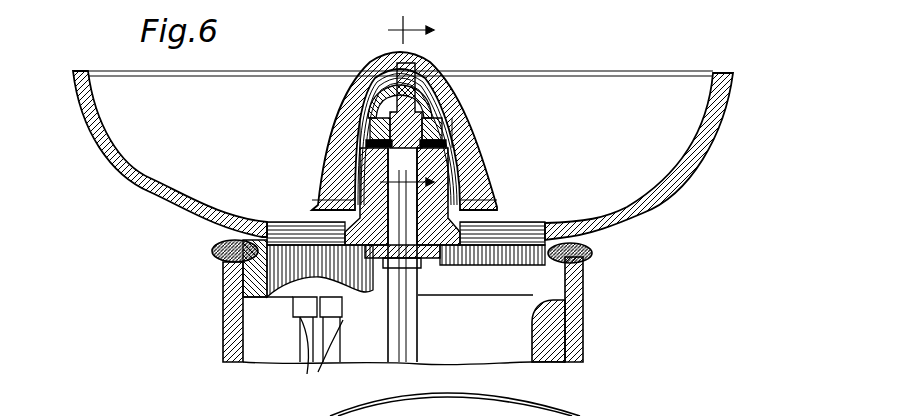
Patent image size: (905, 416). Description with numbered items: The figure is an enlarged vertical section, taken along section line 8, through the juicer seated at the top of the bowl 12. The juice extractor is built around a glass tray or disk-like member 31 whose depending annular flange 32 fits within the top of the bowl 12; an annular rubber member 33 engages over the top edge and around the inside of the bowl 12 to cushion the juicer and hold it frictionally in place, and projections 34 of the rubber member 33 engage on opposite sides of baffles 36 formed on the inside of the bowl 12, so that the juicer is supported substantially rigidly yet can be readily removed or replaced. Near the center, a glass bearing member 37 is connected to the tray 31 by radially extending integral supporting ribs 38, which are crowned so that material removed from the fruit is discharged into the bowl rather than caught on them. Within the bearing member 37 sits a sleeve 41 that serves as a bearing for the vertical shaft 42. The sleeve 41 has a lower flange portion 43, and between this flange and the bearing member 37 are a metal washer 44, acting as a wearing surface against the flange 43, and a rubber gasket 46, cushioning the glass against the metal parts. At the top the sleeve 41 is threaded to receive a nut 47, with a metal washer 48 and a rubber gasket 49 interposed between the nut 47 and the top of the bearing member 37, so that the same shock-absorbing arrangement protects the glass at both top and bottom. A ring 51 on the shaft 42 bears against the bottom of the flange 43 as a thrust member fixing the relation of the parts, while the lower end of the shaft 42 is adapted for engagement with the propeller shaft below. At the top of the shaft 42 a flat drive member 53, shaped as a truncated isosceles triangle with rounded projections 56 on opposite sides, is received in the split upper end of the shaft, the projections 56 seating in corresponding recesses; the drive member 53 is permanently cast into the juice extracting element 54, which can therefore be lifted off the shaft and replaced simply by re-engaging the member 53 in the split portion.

The section line 8 is at (396, 121).
The bowl 12 is at (218, 313).
The tray or disk-like member 31 is at (668, 188).
The depending annular flange 32 is at (580, 290).
The annular rubber member 33 is at (583, 250).
The projections 34 is at (575, 306).
The baffles 36 is at (323, 358).
The bearing member 37 is at (445, 175).
The supporting ribs 38 is at (500, 237).
The sleeve 41 is at (440, 205).
The vertical shaft 42 is at (414, 334).
The lower flange portion 43 is at (347, 252).
The metal washer 44 is at (433, 258).
The rubber gasket 46 is at (340, 210).
The nut 47 is at (362, 132).
The metal washer 48 is at (433, 135).
The rubber gasket 49 is at (362, 143).
The ring 51 is at (423, 268).
The drive member 53 is at (390, 70).
The juice extracting element 54 is at (428, 62).
The rounded projections 56 is at (420, 125).